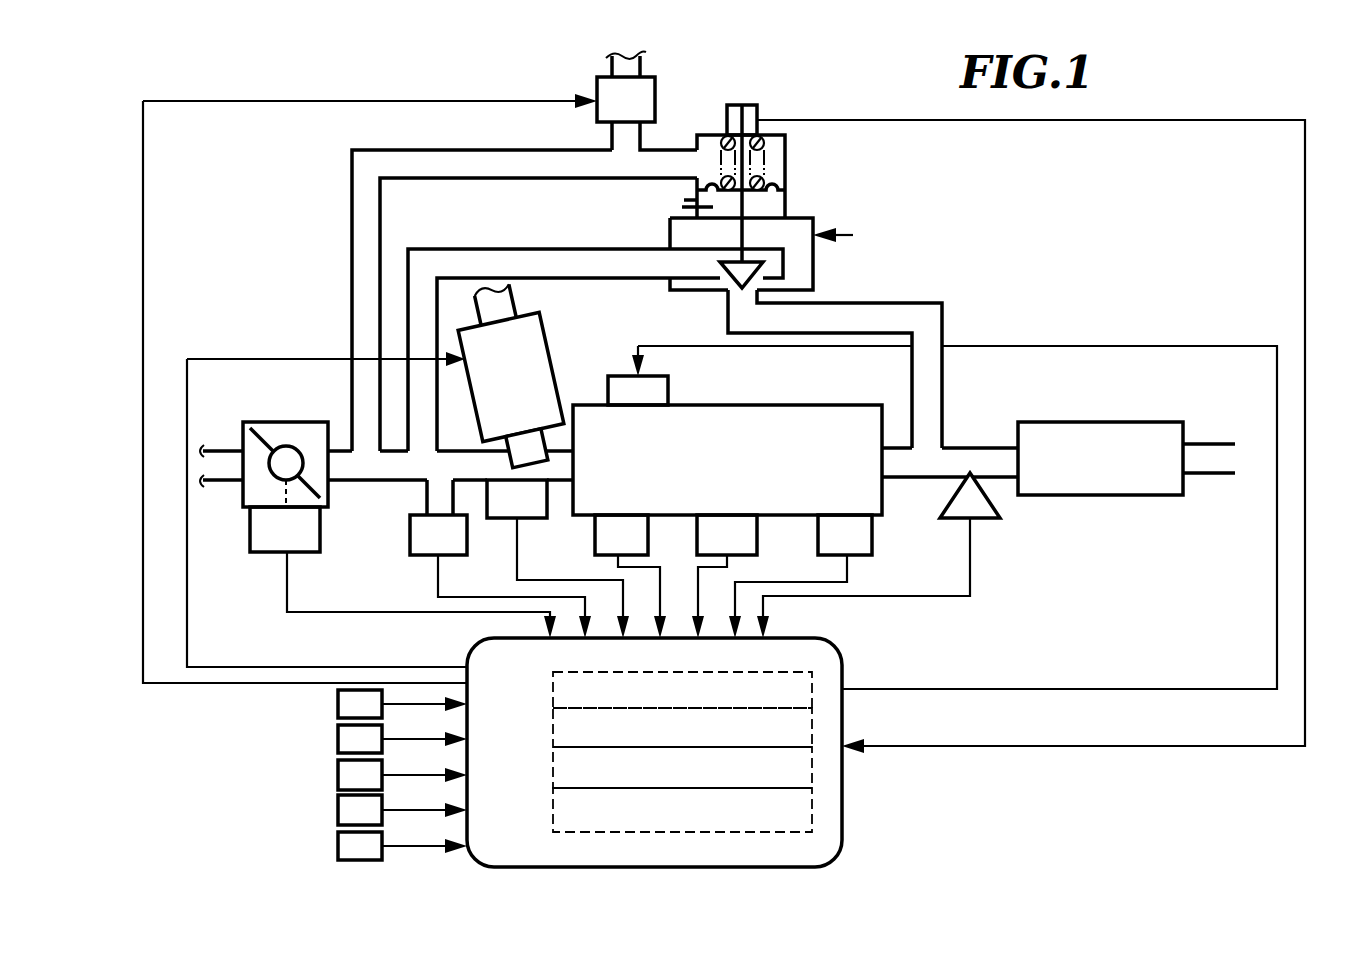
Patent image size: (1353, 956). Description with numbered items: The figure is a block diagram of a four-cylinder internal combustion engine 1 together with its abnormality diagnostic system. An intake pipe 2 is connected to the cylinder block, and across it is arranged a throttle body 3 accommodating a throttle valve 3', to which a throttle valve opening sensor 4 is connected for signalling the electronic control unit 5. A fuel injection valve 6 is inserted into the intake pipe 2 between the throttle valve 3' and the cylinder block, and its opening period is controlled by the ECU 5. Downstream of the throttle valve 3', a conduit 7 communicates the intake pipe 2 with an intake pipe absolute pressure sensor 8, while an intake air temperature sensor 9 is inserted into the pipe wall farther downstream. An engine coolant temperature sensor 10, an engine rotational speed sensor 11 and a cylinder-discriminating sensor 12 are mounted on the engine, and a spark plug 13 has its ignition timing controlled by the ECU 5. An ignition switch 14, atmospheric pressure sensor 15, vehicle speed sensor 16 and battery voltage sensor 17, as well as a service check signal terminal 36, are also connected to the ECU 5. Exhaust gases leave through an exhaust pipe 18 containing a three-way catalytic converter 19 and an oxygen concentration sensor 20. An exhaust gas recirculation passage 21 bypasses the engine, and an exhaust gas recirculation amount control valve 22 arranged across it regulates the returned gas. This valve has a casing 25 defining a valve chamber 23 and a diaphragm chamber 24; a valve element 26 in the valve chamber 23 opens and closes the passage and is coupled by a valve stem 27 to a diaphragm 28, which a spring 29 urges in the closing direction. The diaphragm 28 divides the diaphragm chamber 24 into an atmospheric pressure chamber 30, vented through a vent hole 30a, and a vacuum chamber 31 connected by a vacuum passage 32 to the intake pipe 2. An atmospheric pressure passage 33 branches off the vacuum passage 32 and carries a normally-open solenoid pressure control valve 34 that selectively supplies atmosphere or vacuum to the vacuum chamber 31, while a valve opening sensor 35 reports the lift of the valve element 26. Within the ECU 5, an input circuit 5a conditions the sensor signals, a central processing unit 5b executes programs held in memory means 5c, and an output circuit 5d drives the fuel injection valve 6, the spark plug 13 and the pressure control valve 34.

The internal combustion engine 1 is at (851, 405).
The intake pipe 2 is at (362, 481).
The throttle body 3 is at (268, 444).
The throttle valve 3' is at (297, 430).
The throttle valve opening sensor 4 is at (300, 553).
The electronic control unit 5 is at (469, 650).
The input circuit 5a is at (820, 676).
The central processing unit 5b is at (819, 738).
The memory means 5c is at (822, 785).
The output circuit 5d is at (820, 815).
The fuel injection valve 6 is at (557, 358).
The conduit 7 is at (425, 494).
The intake pipe absolute pressure sensor 8 is at (428, 556).
The intake air temperature sensor 9 is at (504, 519).
The engine coolant temperature sensor 10 is at (595, 525).
The engine rotational speed sensor 11 is at (758, 545).
The cylinder-discriminating sensor 12 is at (874, 531).
The spark plug 13 is at (669, 390).
The ignition switch 14 is at (337, 854).
The atmospheric pressure sensor 15 is at (337, 818).
The vehicle speed sensor 16 is at (337, 783).
The battery voltage sensor 17 is at (337, 747).
The exhaust pipe 18 is at (964, 447).
The catalytic converter 19 is at (1088, 422).
The oxygen concentration sensor 20 is at (992, 503).
The exhaust gas recirculation passage 21 is at (437, 249).
The exhaust gas recirculation amount control valve 22 is at (855, 235).
The valve chamber 23 is at (806, 268).
The diaphragm chamber 24 is at (777, 156).
The casing 25 is at (707, 294).
The valve element 26 is at (782, 292).
The valve stem 27 is at (733, 237).
The diaphragm 28 is at (766, 184).
The spring 29 is at (766, 143).
The atmospheric pressure chamber 30 is at (692, 210).
The vent hole 30a is at (684, 200).
The vacuum chamber 31 is at (710, 135).
The vacuum passage 32 is at (657, 148).
The atmospheric pressure passage 33 is at (609, 137).
The pressure control valve 34 is at (596, 83).
The valve opening sensor 35 is at (759, 106).
The service check signal terminal 36 is at (337, 712).